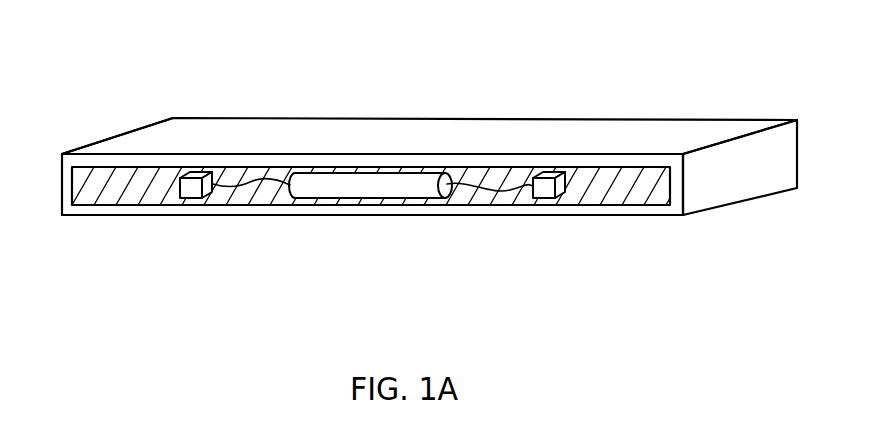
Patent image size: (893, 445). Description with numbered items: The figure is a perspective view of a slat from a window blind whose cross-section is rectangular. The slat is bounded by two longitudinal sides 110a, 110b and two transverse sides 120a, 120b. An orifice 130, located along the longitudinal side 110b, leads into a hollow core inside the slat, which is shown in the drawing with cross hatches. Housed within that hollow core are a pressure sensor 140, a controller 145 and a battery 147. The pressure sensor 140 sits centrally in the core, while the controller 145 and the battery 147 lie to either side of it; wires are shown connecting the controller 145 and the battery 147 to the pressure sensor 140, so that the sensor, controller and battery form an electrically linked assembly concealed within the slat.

The longitudinal side 110a is at (793, 112).
The longitudinal side 110b is at (680, 223).
The transverse side 120a is at (170, 116).
The transverse side 120b is at (795, 191).
The orifice 130 is at (73, 187).
The pressure sensor 140 is at (388, 200).
The controller 145 is at (197, 172).
The battery 147 is at (552, 173).